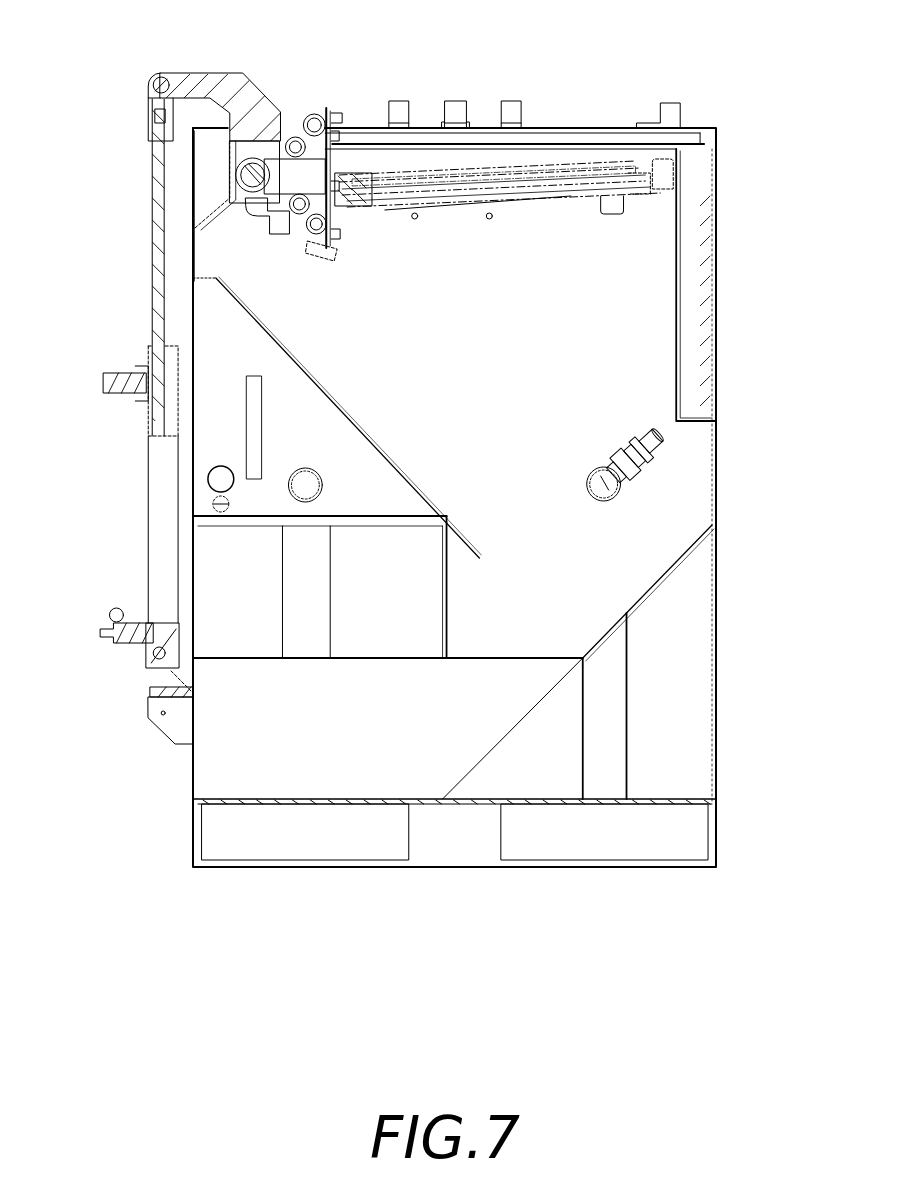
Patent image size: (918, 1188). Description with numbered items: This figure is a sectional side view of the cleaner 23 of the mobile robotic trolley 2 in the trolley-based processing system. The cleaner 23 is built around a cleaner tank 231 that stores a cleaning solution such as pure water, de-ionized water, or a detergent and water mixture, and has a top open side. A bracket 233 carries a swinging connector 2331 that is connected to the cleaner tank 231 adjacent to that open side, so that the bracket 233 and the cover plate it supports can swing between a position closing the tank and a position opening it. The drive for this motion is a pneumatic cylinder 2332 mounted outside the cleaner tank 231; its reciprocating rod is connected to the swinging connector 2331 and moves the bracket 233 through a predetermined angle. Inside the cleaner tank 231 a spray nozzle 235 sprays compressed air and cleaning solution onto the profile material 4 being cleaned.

The electronic device 2 is at (792, 608).
The battery module 4 is at (555, 170).
The cleaner 23 is at (716, 581).
The cleaner tank 231 is at (216, 250).
The bracket 233 is at (498, 180).
The spray nozzle 235 is at (643, 470).
The swinging connector 2331 is at (216, 80).
The pneumatic cylinder 2332 is at (143, 524).